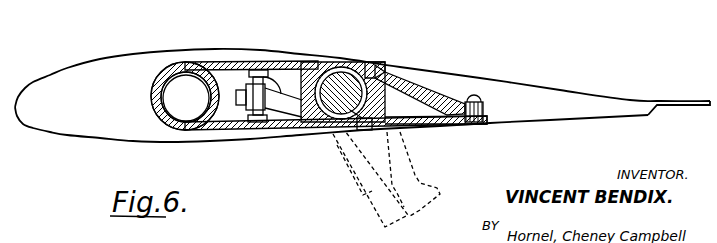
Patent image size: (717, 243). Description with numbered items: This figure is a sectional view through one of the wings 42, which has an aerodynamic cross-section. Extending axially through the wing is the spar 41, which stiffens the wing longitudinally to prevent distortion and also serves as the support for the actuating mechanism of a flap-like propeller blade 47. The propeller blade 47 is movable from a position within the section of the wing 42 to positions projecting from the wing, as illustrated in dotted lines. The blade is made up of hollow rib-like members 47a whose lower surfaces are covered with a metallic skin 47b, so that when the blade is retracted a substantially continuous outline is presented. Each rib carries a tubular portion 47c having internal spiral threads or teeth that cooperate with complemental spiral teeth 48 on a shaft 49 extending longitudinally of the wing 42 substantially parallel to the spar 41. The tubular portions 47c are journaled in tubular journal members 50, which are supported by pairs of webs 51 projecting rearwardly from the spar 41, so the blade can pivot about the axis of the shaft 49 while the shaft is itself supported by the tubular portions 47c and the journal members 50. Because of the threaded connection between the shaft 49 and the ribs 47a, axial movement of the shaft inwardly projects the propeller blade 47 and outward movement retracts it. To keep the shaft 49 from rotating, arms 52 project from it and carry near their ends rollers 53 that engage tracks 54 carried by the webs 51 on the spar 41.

The spar 41 is at (166, 118).
The wing 42 is at (166, 32).
The propeller blade 47 is at (388, 194).
The rib-like member 47a is at (463, 124).
The metallic skin 47b is at (421, 125).
The tubular portion 47c is at (368, 62).
The spiral teeth 48 is at (333, 132).
The shaft 49 is at (384, 66).
The tubular journal member 50 is at (315, 66).
The web 51 is at (227, 62).
The arm 52 is at (281, 96).
The roller 53 is at (257, 71).
The track 54 is at (270, 80).